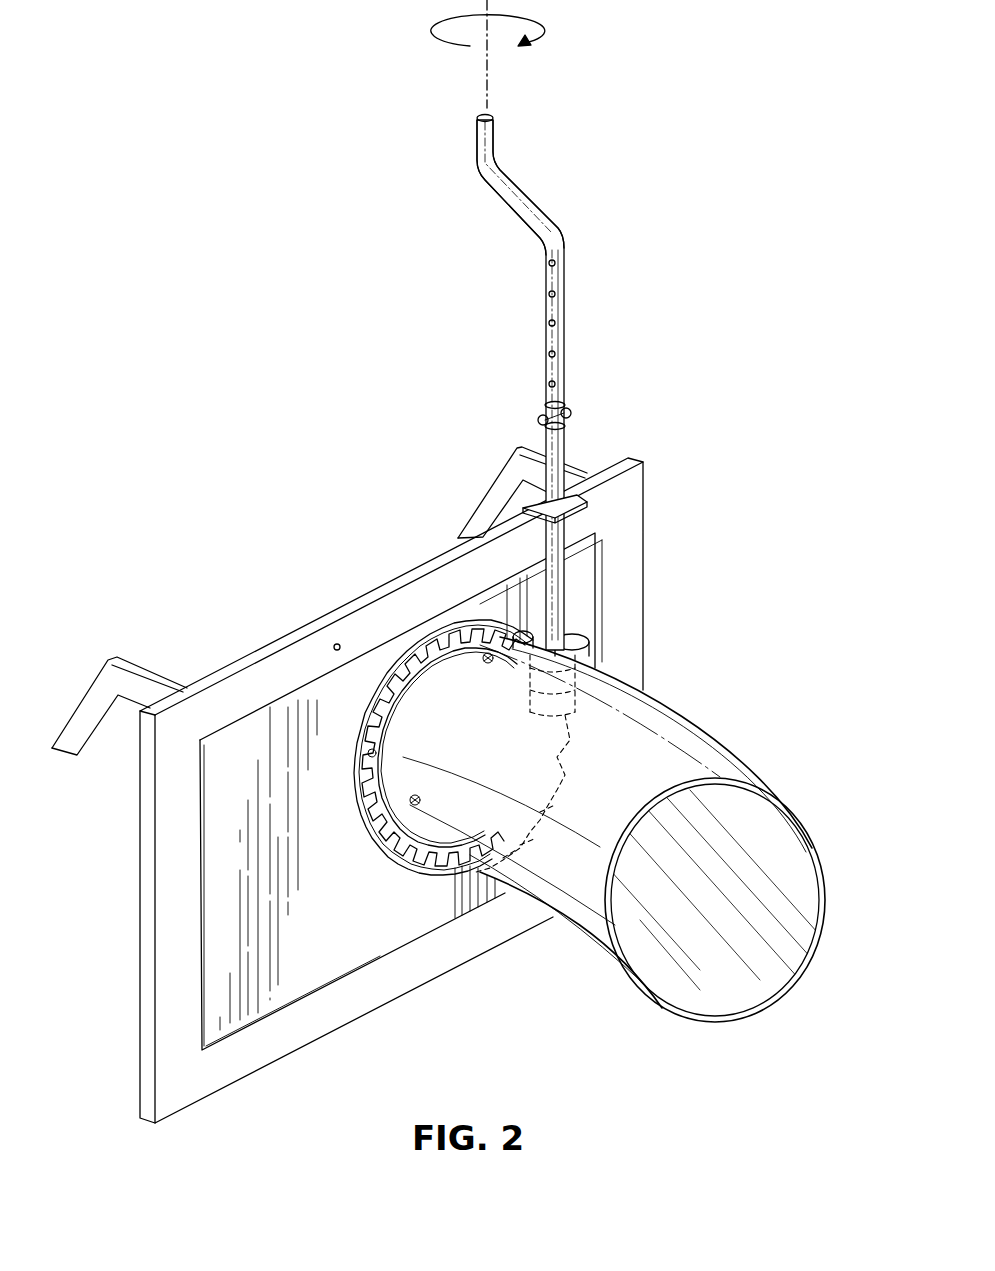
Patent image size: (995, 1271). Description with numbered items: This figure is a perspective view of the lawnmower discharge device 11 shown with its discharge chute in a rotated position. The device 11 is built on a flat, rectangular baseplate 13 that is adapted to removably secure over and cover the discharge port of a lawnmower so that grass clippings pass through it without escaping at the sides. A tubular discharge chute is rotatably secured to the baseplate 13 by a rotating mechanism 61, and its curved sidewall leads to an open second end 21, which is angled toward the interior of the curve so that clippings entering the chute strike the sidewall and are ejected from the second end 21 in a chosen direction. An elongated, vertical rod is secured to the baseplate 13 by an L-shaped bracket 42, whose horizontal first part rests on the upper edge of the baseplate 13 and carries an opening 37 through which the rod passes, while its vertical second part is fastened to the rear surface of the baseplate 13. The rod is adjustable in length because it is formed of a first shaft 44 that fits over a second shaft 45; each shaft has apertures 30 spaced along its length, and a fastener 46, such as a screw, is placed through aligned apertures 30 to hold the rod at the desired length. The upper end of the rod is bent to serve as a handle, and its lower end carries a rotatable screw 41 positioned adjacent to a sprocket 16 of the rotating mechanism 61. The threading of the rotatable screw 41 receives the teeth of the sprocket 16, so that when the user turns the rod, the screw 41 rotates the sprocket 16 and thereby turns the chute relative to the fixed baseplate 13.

The lawnmower discharge device 11 is at (236, 618).
The baseplate 13 is at (640, 531).
The sprocket 16 is at (507, 643).
The second end 21 is at (735, 993).
The apertures 30 is at (544, 325).
The opening 37 is at (590, 486).
The rotatable screw 41 is at (595, 688).
The L-shaped bracket 42 is at (514, 478).
The first shaft 44 is at (560, 440).
The second shaft 45 is at (568, 240).
The fastener 46 is at (548, 410).
The rotating mechanism 61 is at (375, 820).